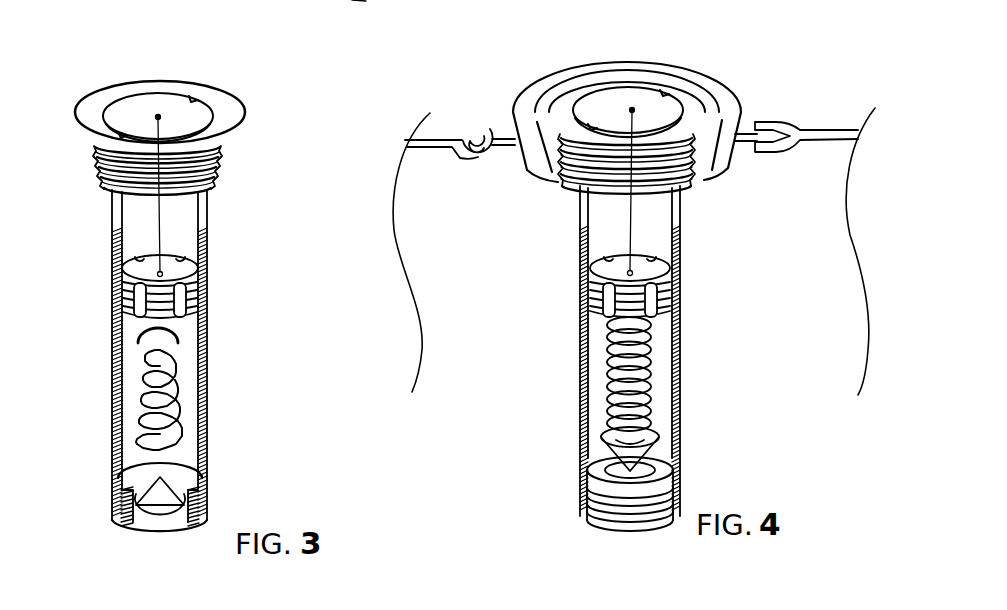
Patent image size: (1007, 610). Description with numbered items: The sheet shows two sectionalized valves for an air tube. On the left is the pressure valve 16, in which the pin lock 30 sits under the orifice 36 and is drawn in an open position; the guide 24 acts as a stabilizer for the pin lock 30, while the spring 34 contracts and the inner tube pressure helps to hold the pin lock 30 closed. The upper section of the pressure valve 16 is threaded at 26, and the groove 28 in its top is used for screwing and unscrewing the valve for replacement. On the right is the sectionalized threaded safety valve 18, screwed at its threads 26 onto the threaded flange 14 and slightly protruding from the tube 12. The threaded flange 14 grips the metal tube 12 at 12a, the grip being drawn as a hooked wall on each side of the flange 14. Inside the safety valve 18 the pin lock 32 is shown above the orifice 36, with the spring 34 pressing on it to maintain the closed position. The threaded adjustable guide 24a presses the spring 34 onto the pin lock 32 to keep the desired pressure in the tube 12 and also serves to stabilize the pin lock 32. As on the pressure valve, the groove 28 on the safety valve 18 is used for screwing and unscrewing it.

In FIG. 4, the metal tube 12 is at (771, 128).
In FIG. 4, the grip 12a is at (478, 128).
In FIG. 4, the threaded flange 14 is at (736, 106).
In FIG. 3, the pressure valve 16 is at (109, 331).
In FIG. 4, the safety valve 18 is at (574, 331).
In FIG. 3, the guide 24 is at (190, 278).
In FIG. 4, the threaded adjustable guide 24a is at (662, 277).
In FIG. 3, the threads 26 is at (219, 177).
In FIG. 4, the threads 26 is at (688, 183).
In FIG. 3, the groove 28 is at (160, 176).
In FIG. 4, the groove 28 is at (628, 178).
In FIG. 3, the pin lock 30 is at (163, 503).
In FIG. 4, the pin lock 32 is at (656, 442).
In FIG. 3, the spring 34 is at (175, 373).
In FIG. 4, the spring 34 is at (662, 372).
In FIG. 3, the orifice 36 is at (192, 481).
In FIG. 4, the orifice 36 is at (672, 478).